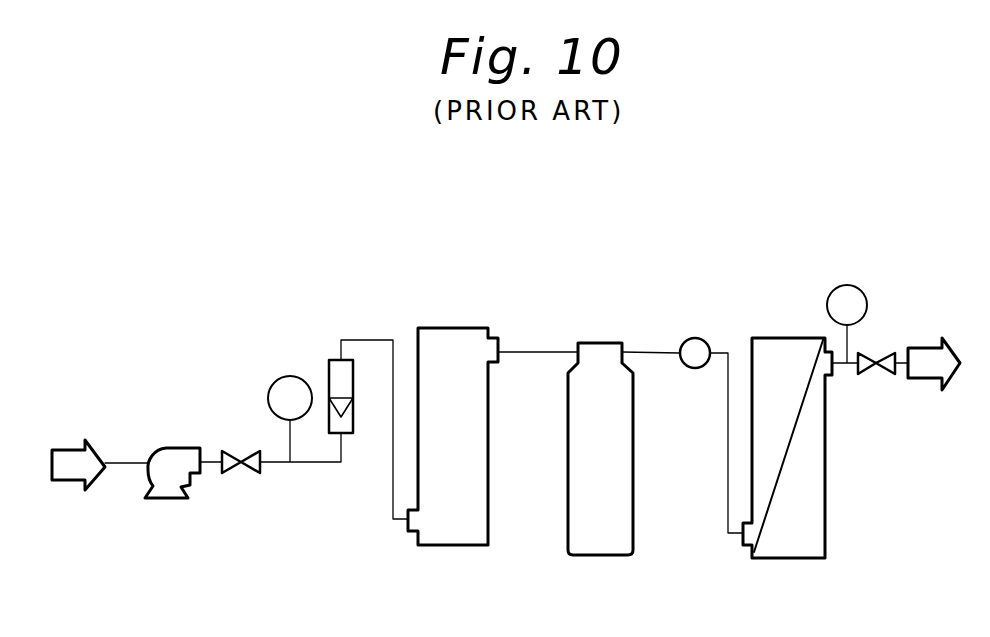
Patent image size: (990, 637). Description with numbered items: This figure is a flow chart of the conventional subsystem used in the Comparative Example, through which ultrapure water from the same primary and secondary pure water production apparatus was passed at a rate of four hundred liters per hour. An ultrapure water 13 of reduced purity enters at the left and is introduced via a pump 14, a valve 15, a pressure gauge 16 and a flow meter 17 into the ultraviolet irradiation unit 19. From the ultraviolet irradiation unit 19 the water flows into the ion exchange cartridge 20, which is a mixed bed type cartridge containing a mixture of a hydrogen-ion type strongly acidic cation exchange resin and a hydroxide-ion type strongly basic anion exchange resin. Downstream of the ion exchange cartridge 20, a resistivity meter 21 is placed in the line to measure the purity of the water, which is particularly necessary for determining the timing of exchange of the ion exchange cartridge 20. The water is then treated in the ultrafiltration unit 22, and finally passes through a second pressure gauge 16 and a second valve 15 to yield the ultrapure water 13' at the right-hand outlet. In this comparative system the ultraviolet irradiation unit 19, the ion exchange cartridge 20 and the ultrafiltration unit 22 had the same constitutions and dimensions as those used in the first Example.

The ultrapure water 13 is at (77, 444).
The ultrapure water 13' is at (949, 344).
The pump 14 is at (177, 448).
The valve 15 is at (244, 474).
The pressure gauge 16 is at (282, 380).
The flow meter 17 is at (332, 360).
The ultraviolet irradiation unit 19 is at (453, 436).
The ion exchange cartridge 20 is at (600, 449).
The resistivity meter 21 is at (700, 338).
The ultrafiltration unit 22 is at (826, 522).